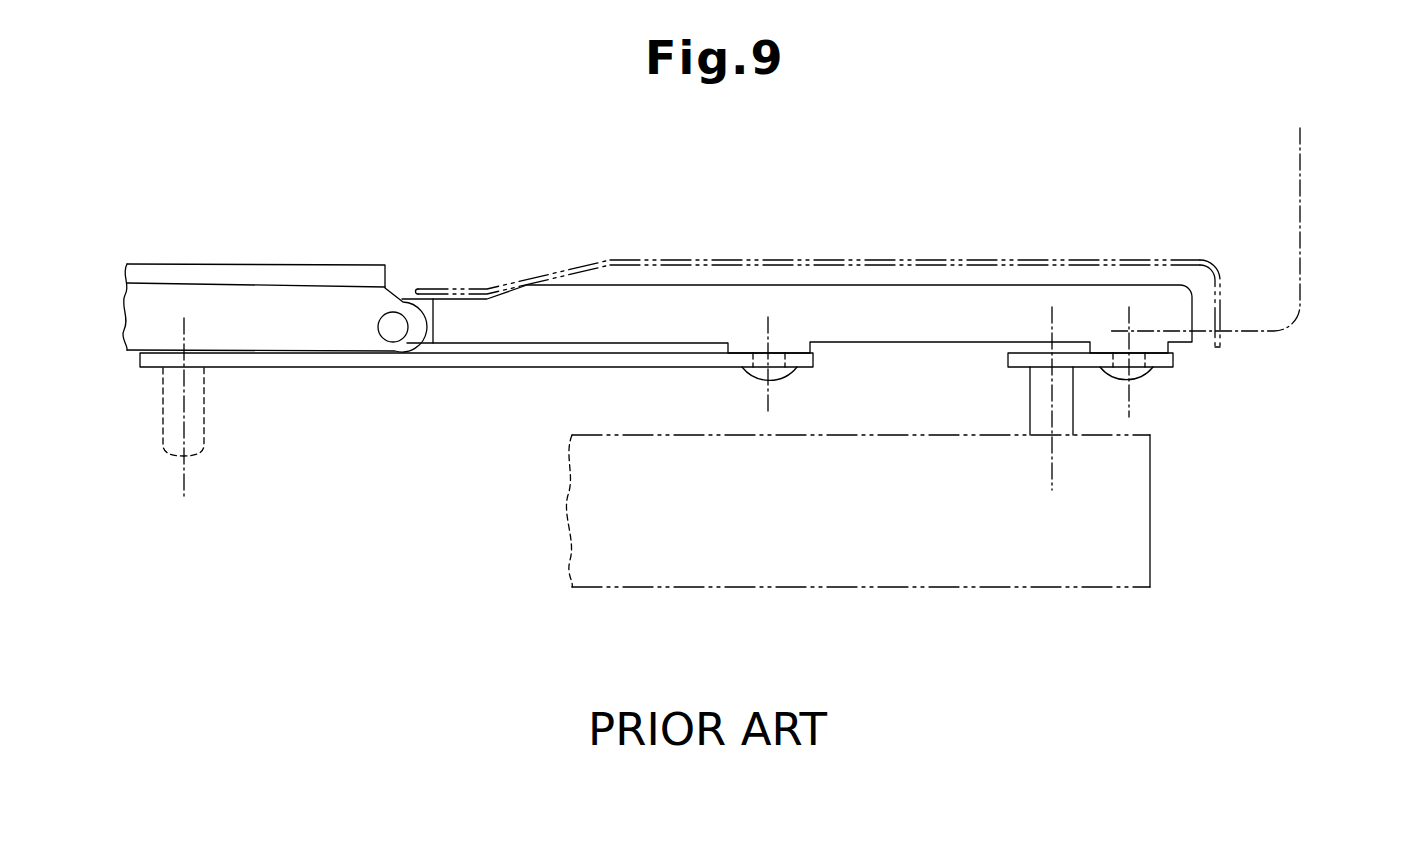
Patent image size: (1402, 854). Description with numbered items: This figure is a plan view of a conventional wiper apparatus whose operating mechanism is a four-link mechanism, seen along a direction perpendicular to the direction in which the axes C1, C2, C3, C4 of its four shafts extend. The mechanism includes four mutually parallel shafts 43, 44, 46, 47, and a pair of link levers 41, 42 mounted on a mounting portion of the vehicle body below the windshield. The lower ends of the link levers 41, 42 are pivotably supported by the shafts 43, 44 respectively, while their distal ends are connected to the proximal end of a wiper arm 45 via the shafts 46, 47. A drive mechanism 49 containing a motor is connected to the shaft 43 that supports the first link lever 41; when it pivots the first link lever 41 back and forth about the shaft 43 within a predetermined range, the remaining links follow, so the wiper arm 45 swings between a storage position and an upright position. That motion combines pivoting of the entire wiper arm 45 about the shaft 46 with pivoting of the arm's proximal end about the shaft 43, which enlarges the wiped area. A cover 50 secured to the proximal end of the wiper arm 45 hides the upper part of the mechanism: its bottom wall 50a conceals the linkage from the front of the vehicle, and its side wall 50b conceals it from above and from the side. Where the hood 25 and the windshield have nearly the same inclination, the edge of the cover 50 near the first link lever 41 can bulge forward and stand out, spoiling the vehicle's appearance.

The hood 25 is at (1300, 215).
The first link lever 41 is at (1090, 366).
The link lever 42 is at (507, 366).
The shaft 43 is at (1030, 395).
The shaft 44 is at (204, 418).
The wiper arm 45 is at (902, 293).
The shaft 46 is at (1150, 372).
The shaft 47 is at (785, 372).
The drive mechanism 49 is at (1150, 535).
The cover 50 is at (1010, 258).
The bottom wall 50a is at (768, 258).
The side wall 50b is at (1223, 308).
The axis C1 is at (1050, 478).
The axis C2 is at (184, 485).
The axis C3 is at (1130, 400).
The axis C4 is at (765, 393).